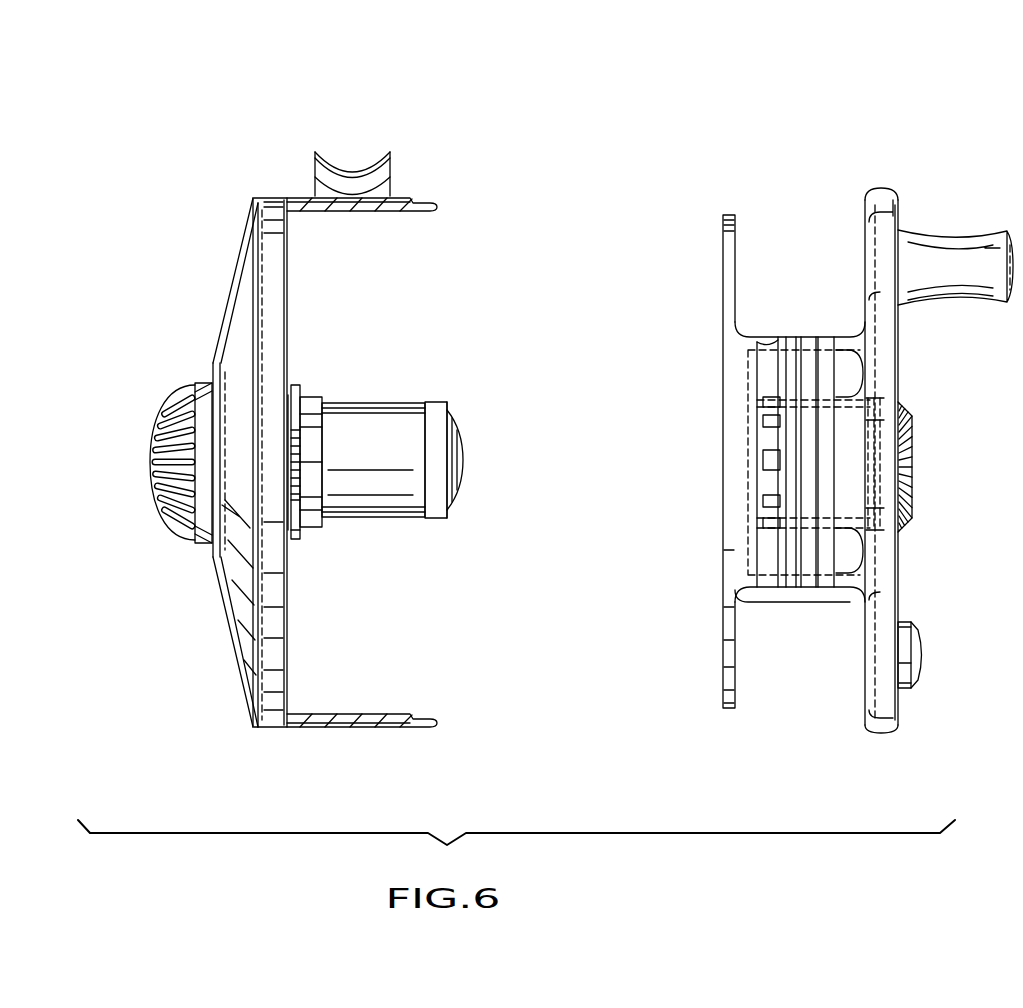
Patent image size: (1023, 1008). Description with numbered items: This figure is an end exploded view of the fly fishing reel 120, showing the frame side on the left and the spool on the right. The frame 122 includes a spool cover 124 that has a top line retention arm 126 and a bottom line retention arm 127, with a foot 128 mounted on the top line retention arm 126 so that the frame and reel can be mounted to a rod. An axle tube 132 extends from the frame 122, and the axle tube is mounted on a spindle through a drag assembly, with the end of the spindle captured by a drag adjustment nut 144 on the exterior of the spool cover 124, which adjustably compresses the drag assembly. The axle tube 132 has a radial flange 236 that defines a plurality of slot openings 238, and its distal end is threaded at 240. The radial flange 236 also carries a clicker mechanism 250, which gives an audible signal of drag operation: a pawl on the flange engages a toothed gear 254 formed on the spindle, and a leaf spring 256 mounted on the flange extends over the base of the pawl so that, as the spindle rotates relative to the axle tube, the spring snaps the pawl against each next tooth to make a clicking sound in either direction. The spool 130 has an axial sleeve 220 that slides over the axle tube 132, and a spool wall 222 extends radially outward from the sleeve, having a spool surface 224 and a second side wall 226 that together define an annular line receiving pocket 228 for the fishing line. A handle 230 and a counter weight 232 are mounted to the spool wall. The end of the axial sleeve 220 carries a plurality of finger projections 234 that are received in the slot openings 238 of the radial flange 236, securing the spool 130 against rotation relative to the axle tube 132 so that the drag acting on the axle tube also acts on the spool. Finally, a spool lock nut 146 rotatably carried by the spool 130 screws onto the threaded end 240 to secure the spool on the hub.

The fly fishing reel 120 is at (527, 128).
The frame 122 is at (237, 258).
The spool cover 124 is at (222, 587).
The top line retention arm 126 is at (380, 213).
The bottom line retention arm 127 is at (400, 710).
The foot 128 is at (392, 172).
The spool 130 is at (858, 235).
The axle tube 132 is at (383, 400).
The drag adjustment nut 144 is at (158, 402).
The spool lock nut 146 is at (905, 402).
The axial sleeve 220 is at (785, 528).
The spool wall 222 is at (900, 580).
The spool surface 224 is at (831, 337).
The second side wall 226 is at (722, 257).
The annular line receiving pocket 228 is at (782, 657).
The handle 230 is at (958, 232).
The counter weight 232 is at (915, 680).
The projections 234 is at (763, 455).
The radial flange 236 is at (311, 394).
The slot openings 238 is at (308, 447).
The threaded end 240 is at (436, 400).
The clicker mechanism 250 is at (287, 395).
The toothed gear 254 is at (296, 500).
The leaf spring 256 is at (296, 383).